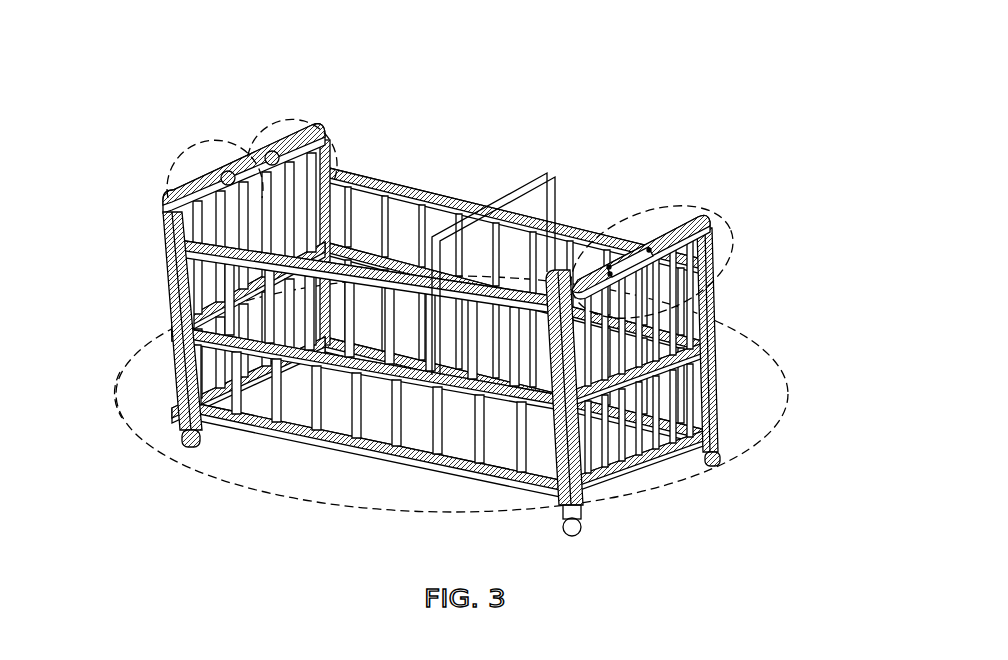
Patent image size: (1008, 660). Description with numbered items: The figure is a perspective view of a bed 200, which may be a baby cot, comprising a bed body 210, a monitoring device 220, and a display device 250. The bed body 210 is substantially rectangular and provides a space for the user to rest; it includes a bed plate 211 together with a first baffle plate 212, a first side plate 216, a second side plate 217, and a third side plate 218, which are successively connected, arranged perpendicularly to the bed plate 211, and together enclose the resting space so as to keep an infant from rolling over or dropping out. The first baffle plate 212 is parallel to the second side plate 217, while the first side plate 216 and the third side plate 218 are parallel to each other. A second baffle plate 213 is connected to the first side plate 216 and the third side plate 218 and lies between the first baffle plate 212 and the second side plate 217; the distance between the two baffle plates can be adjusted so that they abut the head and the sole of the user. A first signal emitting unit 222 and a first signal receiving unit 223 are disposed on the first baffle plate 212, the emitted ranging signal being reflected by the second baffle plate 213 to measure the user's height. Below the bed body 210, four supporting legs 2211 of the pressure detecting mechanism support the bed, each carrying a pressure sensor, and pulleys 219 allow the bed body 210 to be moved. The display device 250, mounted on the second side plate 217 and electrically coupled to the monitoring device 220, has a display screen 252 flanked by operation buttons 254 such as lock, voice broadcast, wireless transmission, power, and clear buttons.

The bed 200 is at (596, 28).
The bed body 210 is at (749, 419).
The bed plate 211 is at (417, 340).
The first baffle plate 212 is at (250, 147).
The second baffle plate 213 is at (555, 172).
The first side plate 216 is at (403, 180).
The second side plate 217 is at (703, 213).
The third side plate 218 is at (175, 250).
The pulleys 219 is at (717, 450).
The monitoring device 220 is at (120, 405).
The supporting legs 2211 is at (186, 438).
The first signal emitting unit 222 is at (187, 150).
The first signal receiving unit 223 is at (327, 127).
The display device 250 is at (640, 210).
The display screen 252 is at (657, 250).
The operation buttons 254 is at (651, 248).